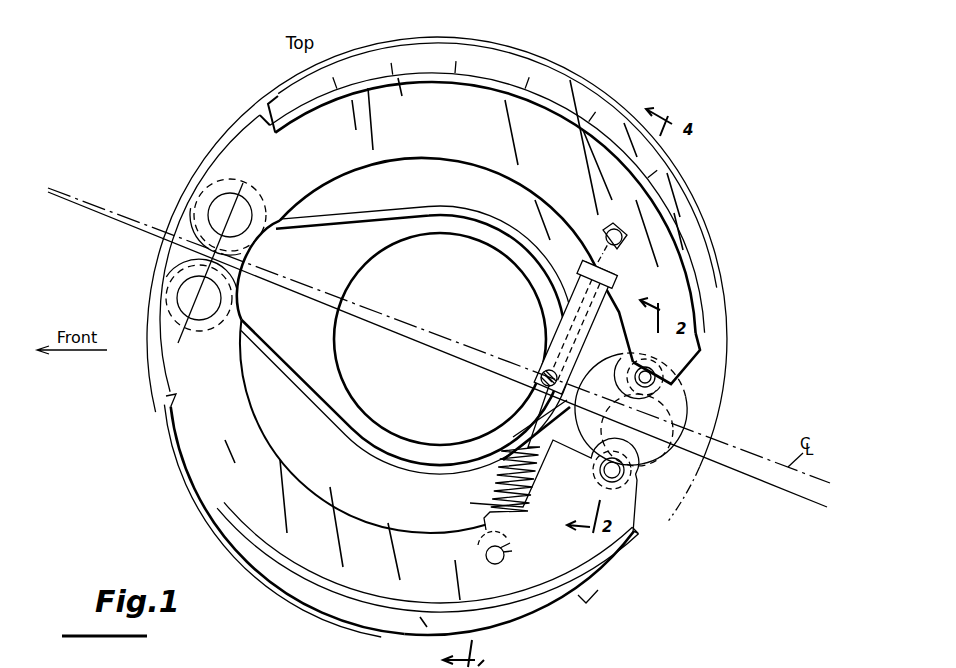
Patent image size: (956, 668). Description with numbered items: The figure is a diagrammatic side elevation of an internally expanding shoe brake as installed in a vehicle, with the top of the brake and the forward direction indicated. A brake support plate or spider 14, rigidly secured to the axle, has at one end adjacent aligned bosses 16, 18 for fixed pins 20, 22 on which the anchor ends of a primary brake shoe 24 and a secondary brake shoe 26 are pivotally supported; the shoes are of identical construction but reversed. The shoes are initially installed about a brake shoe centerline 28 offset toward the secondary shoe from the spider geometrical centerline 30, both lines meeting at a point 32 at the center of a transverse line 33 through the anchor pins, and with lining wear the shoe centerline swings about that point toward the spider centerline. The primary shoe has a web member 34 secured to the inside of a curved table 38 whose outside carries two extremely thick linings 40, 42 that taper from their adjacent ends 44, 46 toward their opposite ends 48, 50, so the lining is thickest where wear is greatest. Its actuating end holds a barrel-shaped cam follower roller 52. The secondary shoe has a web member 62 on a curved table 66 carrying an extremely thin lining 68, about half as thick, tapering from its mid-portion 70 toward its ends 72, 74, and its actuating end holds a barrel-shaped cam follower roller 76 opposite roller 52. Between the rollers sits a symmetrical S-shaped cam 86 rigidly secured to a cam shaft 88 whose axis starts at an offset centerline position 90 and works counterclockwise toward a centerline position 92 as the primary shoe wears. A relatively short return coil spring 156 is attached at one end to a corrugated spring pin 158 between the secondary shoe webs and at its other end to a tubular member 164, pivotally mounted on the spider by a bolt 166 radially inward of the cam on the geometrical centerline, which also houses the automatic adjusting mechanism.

The brake support plate or spider 14 is at (403, 227).
The boss 16 is at (243, 183).
The boss 18 is at (230, 320).
The fixed pin 20 is at (240, 212).
The fixed pin 22 is at (218, 300).
The primary brake shoe 24 is at (449, 150).
The secondary brake shoe 26 is at (392, 540).
The brake shoe centerline 28 is at (458, 360).
The spider geometrical centerline 30 is at (530, 372).
The intersection point 32 is at (253, 248).
The transverse line 33 is at (178, 343).
The web member 34 is at (390, 153).
The curved table 38 is at (698, 333).
The brake shoe lining 40 is at (470, 88).
The brake shoe lining 42 is at (560, 97).
The adjacent end of lining 44 is at (529, 52).
The adjacent end of lining 46 is at (576, 82).
The opposite end of lining 48 is at (270, 97).
The opposite end of lining 50 is at (720, 268).
The cam follower roller 52 is at (683, 390).
The web member 62 is at (330, 513).
The curved table 66 is at (627, 547).
The brake shoe lining 68 is at (550, 600).
The mid-portion of lining 70 is at (383, 628).
The end of lining 72 is at (167, 440).
The end of lining 74 is at (583, 597).
The cam follower roller 76 is at (633, 490).
The S-shaped cam 86 is at (697, 415).
The cam shaft 88 is at (712, 450).
The initial centerline position 90 is at (592, 450).
The centerline position 92 is at (677, 397).
The return coil spring 156 is at (490, 490).
The corrugated spring pin 158 is at (504, 560).
The tubular member 164 is at (557, 303).
The bolt 166 is at (537, 377).